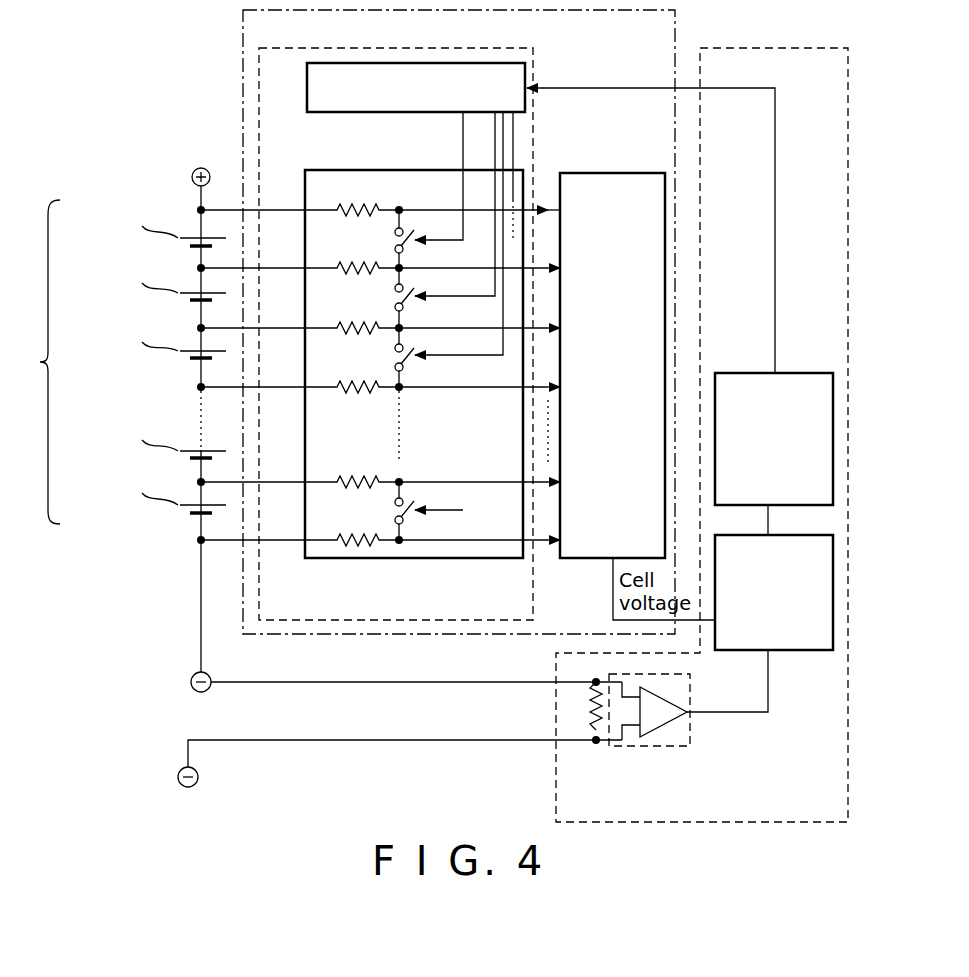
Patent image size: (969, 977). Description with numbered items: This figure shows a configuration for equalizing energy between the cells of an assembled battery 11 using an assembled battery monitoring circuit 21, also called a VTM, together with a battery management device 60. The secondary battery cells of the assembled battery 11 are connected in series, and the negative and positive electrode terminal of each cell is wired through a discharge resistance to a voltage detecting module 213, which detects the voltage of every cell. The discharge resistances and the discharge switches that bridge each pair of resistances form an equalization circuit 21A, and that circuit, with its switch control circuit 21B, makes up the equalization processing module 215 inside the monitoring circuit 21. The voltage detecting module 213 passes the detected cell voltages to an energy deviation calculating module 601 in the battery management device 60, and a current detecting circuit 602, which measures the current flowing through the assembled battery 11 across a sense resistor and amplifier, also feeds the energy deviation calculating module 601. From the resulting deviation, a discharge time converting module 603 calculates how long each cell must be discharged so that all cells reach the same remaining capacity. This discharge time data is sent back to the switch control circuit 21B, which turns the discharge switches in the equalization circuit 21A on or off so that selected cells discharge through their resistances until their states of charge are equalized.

The assembled battery 11 is at (120, 477).
The assembled battery monitoring circuit 21 is at (243, 30).
The equalization circuit 21A is at (315, 170).
The switch control circuit 21B is at (420, 112).
The voltage detecting module 213 is at (595, 173).
The equalization processing module 215 is at (385, 620).
The battery management device 60 is at (748, 48).
The energy deviation calculating module 601 is at (806, 650).
The current detecting circuit 602 is at (636, 746).
The discharge time converting module 603 is at (738, 373).